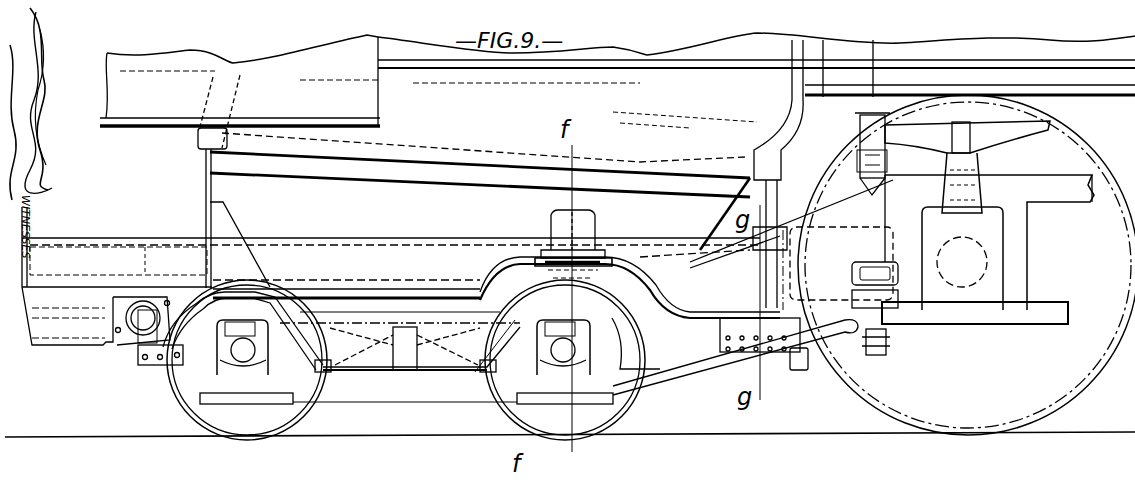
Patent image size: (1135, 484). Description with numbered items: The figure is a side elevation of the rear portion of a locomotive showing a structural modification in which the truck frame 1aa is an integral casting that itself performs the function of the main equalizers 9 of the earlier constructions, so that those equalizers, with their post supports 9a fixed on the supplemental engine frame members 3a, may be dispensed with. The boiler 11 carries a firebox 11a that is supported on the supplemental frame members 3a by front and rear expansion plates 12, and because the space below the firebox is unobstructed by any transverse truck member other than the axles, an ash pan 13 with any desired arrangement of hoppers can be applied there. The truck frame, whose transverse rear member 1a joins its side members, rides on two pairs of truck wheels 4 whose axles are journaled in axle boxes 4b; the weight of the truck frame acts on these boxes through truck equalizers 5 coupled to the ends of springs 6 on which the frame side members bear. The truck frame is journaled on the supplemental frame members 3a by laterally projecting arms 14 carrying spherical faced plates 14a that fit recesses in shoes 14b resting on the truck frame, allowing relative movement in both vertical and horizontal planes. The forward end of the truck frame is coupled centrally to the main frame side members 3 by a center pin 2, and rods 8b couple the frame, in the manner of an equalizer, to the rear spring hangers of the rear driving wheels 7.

The boiler 11 is at (964, 48).
The firebox 11a is at (483, 164).
The expansion plates 12 is at (206, 186).
The ash pan 13 is at (248, 220).
The supplemental frame members 3a is at (364, 248).
The truck frame 1aa is at (452, 305).
The laterally projecting arms 14 is at (560, 224).
The spherical faced plates 14a is at (545, 252).
The shoes 14b is at (604, 254).
The truck wheels 4 is at (184, 422).
The axle boxes 4b is at (604, 349).
The truck equalizers 5 is at (384, 360).
The springs 6 is at (470, 370).
The transverse rear member 1a is at (834, 350).
The center pin 2 is at (800, 355).
The side members of the main frame 3 is at (1058, 203).
The main equalizers 9 is at (1012, 138).
The post supports 9a is at (880, 154).
The rods 8b is at (873, 194).
The rear driving wheels 7 is at (866, 402).